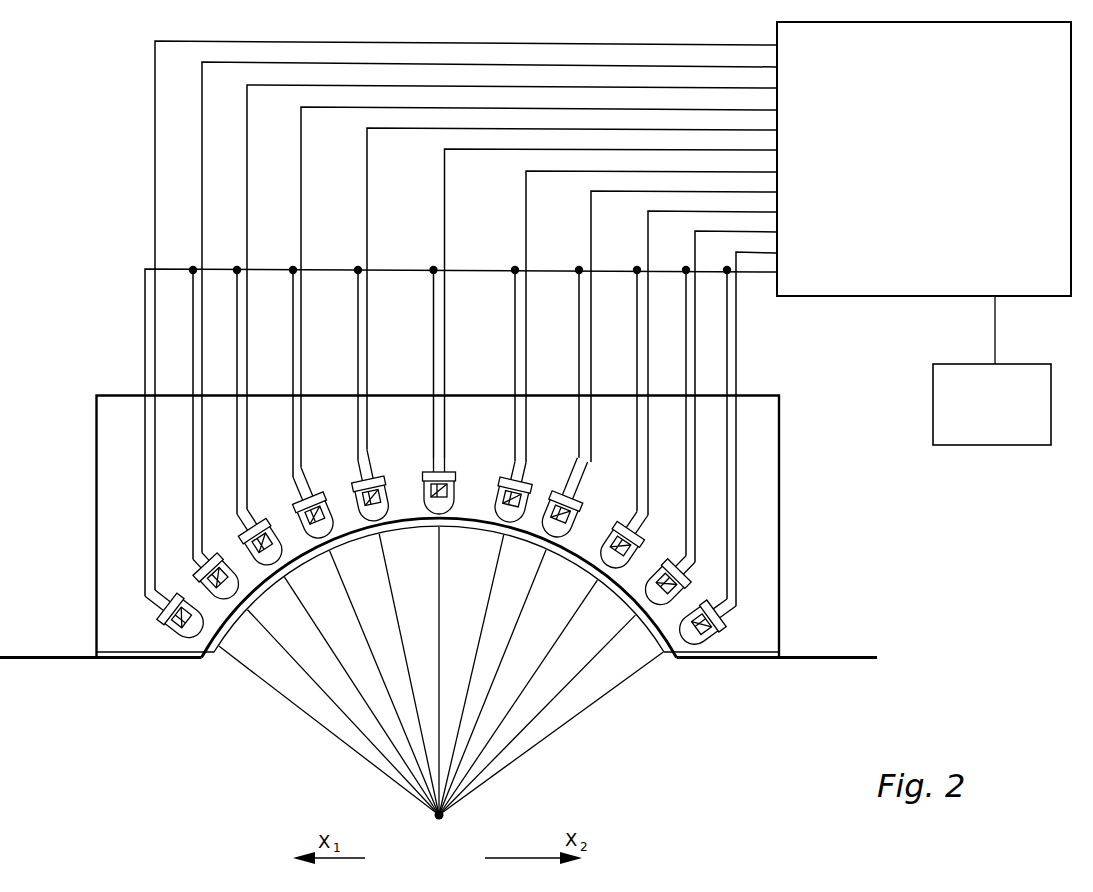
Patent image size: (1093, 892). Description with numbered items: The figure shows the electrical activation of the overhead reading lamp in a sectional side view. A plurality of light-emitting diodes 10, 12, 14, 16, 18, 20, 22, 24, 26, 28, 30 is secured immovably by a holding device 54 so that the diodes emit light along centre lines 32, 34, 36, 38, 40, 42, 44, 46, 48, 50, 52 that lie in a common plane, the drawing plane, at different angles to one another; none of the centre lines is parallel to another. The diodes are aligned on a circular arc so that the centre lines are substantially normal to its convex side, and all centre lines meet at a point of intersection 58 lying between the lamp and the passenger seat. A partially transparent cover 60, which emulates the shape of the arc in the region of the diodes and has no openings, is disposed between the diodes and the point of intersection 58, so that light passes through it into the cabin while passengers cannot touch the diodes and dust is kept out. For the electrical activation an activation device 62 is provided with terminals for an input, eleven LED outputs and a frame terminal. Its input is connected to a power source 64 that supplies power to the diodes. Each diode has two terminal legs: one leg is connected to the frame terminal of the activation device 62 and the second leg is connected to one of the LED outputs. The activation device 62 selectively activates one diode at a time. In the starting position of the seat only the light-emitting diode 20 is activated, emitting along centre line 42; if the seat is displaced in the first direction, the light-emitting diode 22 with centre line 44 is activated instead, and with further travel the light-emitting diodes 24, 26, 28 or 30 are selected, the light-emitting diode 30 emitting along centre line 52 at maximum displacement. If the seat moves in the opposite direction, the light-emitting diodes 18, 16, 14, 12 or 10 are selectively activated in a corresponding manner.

The light-emitting diode 10 is at (174, 633).
The light-emitting diode 12 is at (202, 584).
The light-emitting diode 14 is at (247, 549).
The light-emitting diode 16 is at (293, 516).
The light-emitting diode 18 is at (358, 487).
The light-emitting diode 20 is at (420, 481).
The light-emitting diode 22 is at (498, 490).
The light-emitting diode 24 is at (556, 508).
The light-emitting diode 26 is at (612, 532).
The light-emitting diode 28 is at (661, 564).
The light-emitting diode 30 is at (694, 604).
The centre line 32 is at (282, 697).
The centre line 34 is at (285, 655).
The centre line 36 is at (319, 623).
The centre line 38 is at (349, 609).
The centre line 40 is at (386, 601).
The centre line 42 is at (436, 600).
The centre line 44 is at (488, 606).
The centre line 46 is at (530, 611).
The centre line 48 is at (575, 635).
The centre line 50 is at (595, 653).
The centre line 52 is at (614, 689).
The holding device 54 is at (94, 420).
The point of intersection 58 is at (444, 818).
The cover 60 is at (60, 662).
The activation device 62 is at (924, 159).
The power source 64 is at (992, 370).